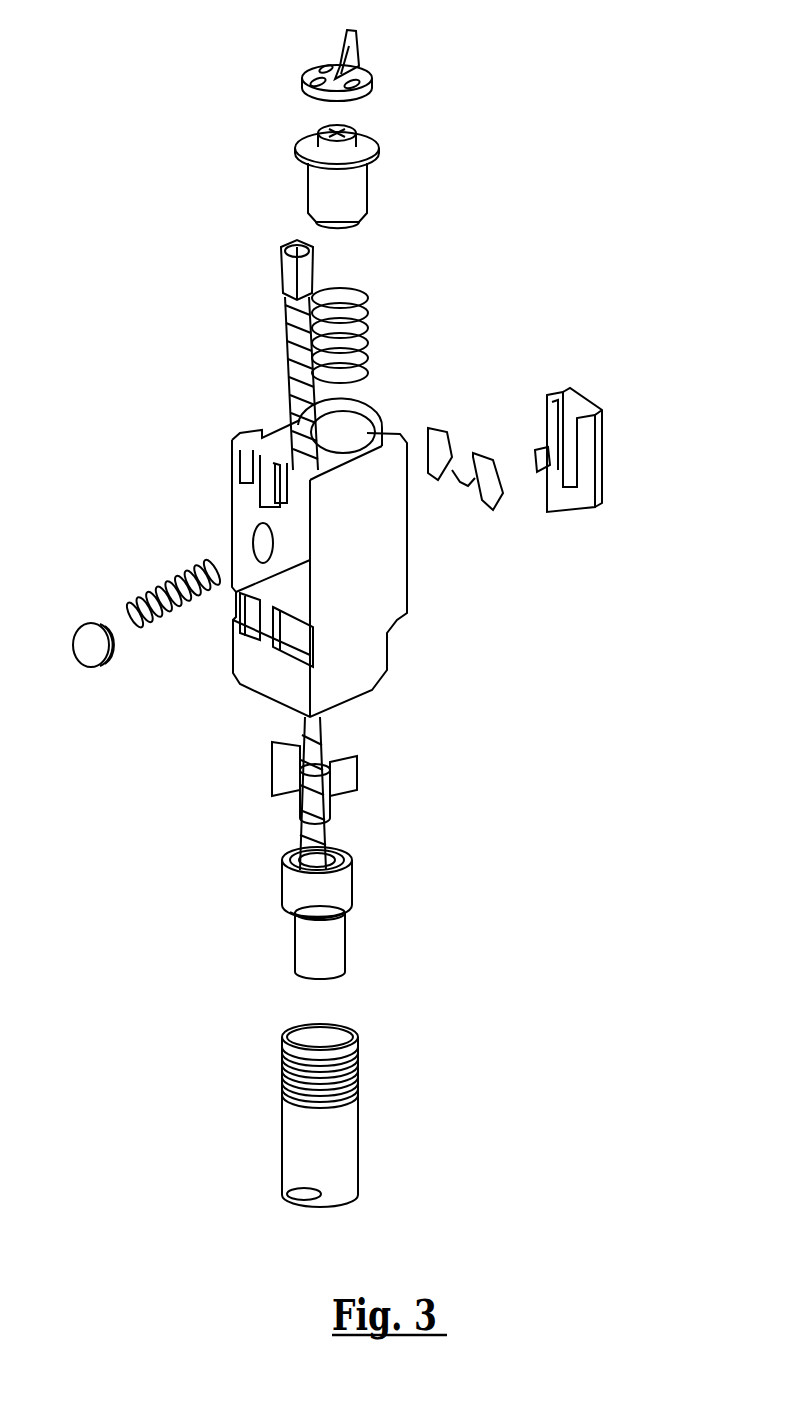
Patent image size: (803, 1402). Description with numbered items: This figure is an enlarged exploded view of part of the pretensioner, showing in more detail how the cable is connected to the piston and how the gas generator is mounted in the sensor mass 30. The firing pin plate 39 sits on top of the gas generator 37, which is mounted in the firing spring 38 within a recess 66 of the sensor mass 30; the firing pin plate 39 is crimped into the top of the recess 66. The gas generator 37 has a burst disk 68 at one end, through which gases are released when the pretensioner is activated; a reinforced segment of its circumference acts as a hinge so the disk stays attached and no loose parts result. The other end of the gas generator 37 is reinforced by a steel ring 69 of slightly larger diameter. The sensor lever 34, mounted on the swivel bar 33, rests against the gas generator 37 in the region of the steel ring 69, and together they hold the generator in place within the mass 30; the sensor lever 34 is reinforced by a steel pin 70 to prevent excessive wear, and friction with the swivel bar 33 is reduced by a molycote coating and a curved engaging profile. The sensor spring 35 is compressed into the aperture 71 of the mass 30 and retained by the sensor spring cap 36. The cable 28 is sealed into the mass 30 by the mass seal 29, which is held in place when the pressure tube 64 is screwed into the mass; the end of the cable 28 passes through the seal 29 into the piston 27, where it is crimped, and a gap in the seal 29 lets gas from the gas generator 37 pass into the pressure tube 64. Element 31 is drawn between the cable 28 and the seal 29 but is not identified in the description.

The piston 27 is at (350, 946).
The cable 28 is at (330, 740).
The mass seal 29 is at (355, 850).
The sensor mass 30 is at (407, 578).
The wing nut 31 is at (335, 802).
The swivel bar 33 is at (495, 513).
The sensor lever 34 is at (604, 490).
The sensor spring 35 is at (180, 603).
The sensor spring cap 36 is at (94, 667).
The gas generator 37 is at (370, 190).
The firing spring 38 is at (370, 336).
The firing pin plate 39 is at (365, 50).
The pressure tube 64 is at (358, 1120).
The recess 66 is at (360, 425).
The burst disk 68 is at (340, 228).
The steel ring 69 is at (372, 142).
The steel pin 70 is at (535, 458).
The aperture 71 is at (256, 544).